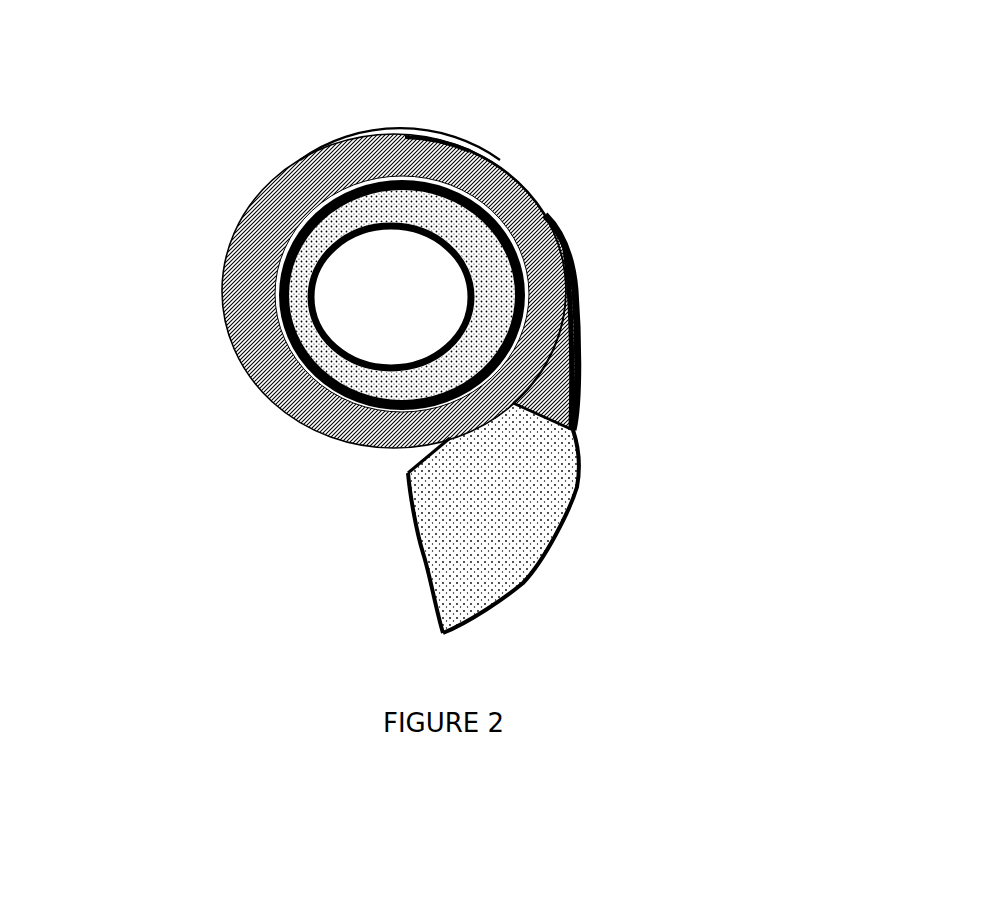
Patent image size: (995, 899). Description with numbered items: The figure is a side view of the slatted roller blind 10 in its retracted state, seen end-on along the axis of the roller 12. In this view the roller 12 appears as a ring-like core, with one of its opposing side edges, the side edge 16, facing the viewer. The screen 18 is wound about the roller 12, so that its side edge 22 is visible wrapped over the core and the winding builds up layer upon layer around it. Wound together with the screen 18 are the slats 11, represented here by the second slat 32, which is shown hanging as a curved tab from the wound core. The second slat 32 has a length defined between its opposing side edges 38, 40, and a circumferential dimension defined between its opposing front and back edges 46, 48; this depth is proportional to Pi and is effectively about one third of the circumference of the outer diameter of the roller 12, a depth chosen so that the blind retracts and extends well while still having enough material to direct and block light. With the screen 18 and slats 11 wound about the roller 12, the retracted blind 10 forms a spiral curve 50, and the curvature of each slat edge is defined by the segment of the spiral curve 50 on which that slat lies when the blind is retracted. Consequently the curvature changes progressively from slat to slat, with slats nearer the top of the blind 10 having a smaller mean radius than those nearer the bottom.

The slatted roller blind 10 is at (202, 692).
The slats 11 is at (205, 333).
The roller 12 is at (293, 172).
The side edge of the roller 16 is at (522, 190).
The screen 18 is at (563, 390).
The side edge of the screen 22 is at (572, 353).
The second slat 32 is at (450, 520).
The side edge of the second slat 38 is at (535, 588).
The side edge of the second slat 40 is at (423, 460).
The front edge of the second slat 46 is at (417, 572).
The back edge of the second slat 48 is at (572, 422).
The spiral curve 50 is at (483, 160).